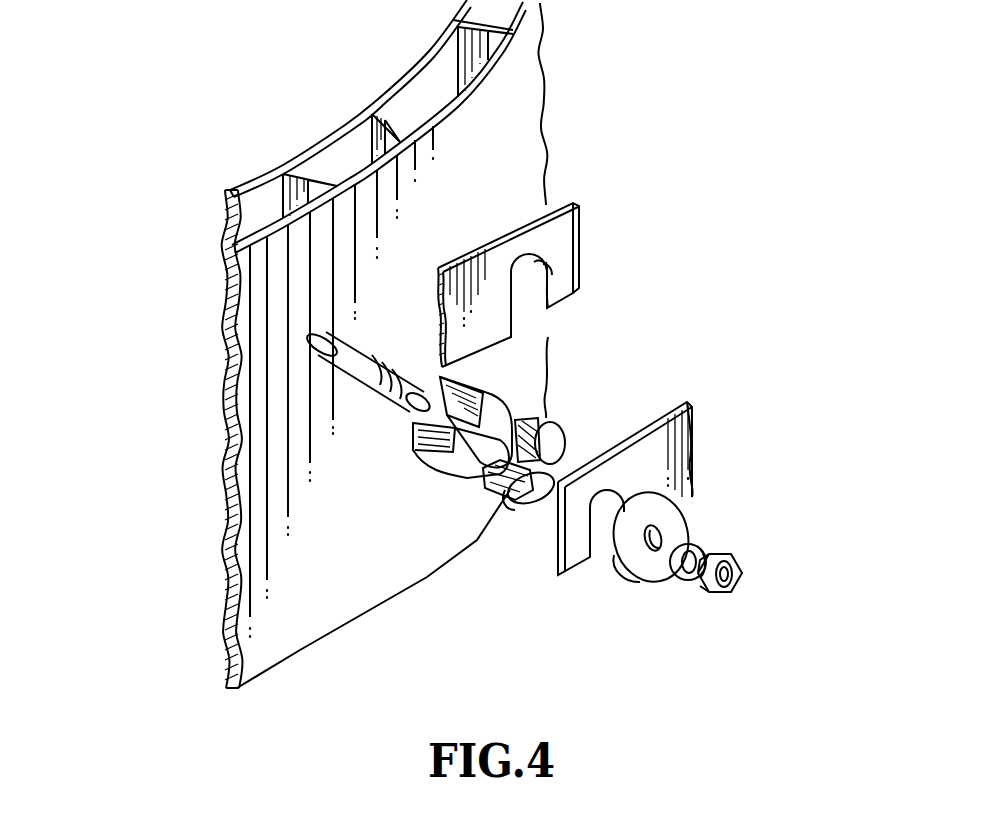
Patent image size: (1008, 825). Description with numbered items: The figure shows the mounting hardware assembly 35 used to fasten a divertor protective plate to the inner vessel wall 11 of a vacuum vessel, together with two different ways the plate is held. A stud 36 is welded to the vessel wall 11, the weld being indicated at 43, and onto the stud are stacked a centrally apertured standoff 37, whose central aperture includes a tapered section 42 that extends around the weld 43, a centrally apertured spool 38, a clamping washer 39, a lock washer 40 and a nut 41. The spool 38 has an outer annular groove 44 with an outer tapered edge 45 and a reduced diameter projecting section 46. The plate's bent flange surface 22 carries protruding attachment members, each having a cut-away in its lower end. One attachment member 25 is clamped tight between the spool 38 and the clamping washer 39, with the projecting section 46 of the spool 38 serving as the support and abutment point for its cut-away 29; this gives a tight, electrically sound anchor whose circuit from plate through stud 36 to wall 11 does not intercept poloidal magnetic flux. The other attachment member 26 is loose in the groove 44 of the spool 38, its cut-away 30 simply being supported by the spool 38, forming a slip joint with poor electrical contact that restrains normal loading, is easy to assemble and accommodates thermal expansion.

The vessel wall 11 is at (538, 55).
The surface of flange-like portion 22 is at (457, 325).
The attachment member 25 is at (716, 484).
The attachment member 26 is at (623, 264).
The cut-away 29 is at (598, 545).
The cut-away 30 is at (549, 331).
The mounting hardware assembly 35 is at (402, 545).
The stud 36 is at (393, 407).
The standoff 37 is at (423, 470).
The spool 38 is at (517, 500).
The clamping washer 39 is at (638, 572).
The lock washer 40 is at (677, 577).
The nut 41 is at (738, 597).
The tapered section 42 is at (408, 425).
The weld 43 is at (313, 372).
The outer annular groove 44 is at (543, 418).
The outer tapered edge 45 is at (483, 490).
The projecting section 46 is at (543, 503).